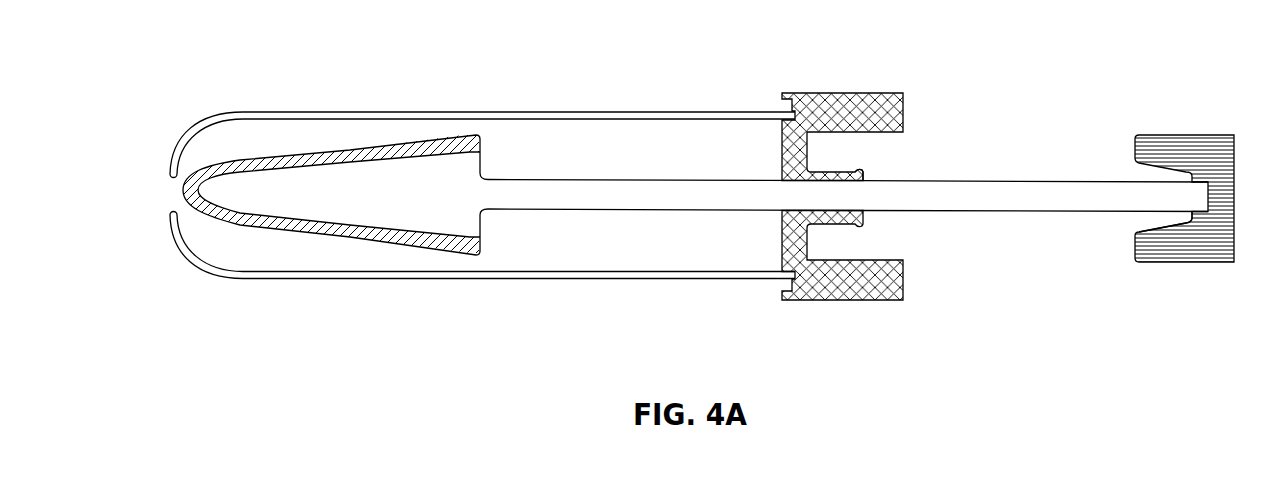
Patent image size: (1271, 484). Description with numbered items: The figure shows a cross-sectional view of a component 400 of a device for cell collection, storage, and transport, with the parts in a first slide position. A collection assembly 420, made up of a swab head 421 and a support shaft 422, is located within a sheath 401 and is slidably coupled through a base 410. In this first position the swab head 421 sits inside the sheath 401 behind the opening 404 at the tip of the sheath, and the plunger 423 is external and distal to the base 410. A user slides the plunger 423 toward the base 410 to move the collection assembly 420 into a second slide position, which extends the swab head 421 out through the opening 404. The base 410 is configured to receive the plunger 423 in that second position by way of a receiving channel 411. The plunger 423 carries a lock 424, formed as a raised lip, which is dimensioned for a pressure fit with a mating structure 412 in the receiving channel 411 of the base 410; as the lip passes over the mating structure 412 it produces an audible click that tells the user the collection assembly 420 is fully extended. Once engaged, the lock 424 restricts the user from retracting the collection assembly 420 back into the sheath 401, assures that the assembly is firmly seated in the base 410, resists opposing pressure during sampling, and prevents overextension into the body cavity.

The component 400 is at (661, 197).
The sheath 401 is at (245, 278).
The opening 404 is at (155, 192).
The base 410 is at (852, 113).
The receiving channel 411 is at (877, 233).
The mating structure 412 is at (860, 170).
The collection assembly 420 is at (690, 210).
The swab head 421 is at (350, 217).
The support shaft 422 is at (1012, 197).
The plunger 423 is at (1160, 261).
The lock 424 is at (1188, 223).